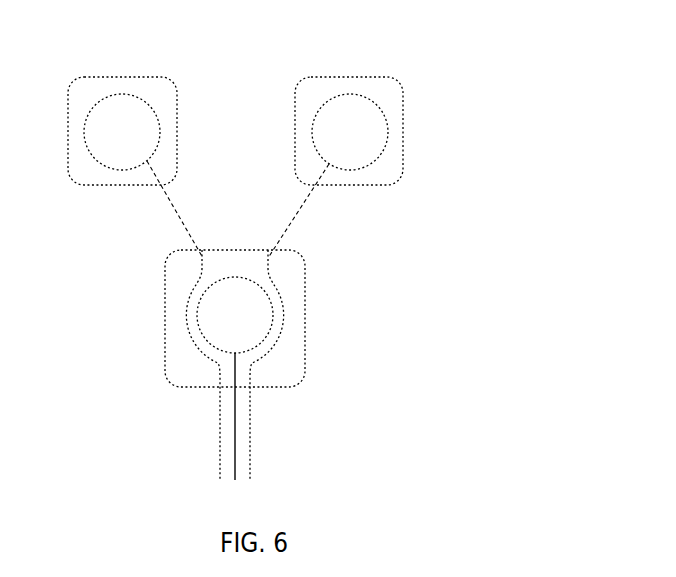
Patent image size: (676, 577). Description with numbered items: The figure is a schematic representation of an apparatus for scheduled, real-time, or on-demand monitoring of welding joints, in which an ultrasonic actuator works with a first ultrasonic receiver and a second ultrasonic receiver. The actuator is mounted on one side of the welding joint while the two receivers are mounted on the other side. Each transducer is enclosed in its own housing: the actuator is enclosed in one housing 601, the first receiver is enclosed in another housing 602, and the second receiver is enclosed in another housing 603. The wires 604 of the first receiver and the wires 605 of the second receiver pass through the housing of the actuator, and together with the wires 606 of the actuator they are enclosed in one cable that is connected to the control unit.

The housing 601 is at (153, 78).
The housing 602 is at (402, 95).
The housing 603 is at (305, 295).
The wires of R1 604 is at (175, 222).
The wires of R2 605 is at (282, 240).
The wires of the actuator 606 is at (235, 457).